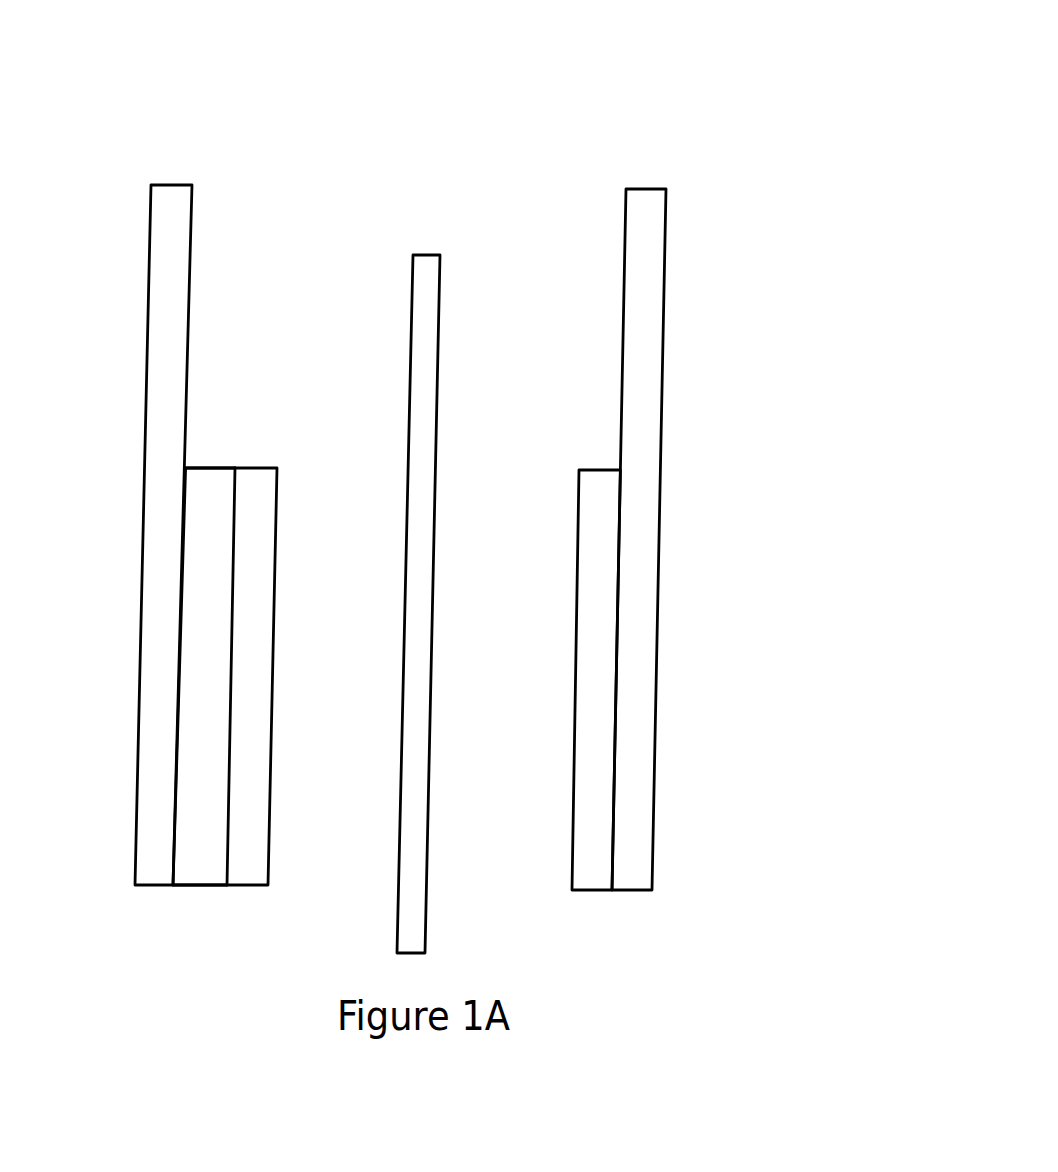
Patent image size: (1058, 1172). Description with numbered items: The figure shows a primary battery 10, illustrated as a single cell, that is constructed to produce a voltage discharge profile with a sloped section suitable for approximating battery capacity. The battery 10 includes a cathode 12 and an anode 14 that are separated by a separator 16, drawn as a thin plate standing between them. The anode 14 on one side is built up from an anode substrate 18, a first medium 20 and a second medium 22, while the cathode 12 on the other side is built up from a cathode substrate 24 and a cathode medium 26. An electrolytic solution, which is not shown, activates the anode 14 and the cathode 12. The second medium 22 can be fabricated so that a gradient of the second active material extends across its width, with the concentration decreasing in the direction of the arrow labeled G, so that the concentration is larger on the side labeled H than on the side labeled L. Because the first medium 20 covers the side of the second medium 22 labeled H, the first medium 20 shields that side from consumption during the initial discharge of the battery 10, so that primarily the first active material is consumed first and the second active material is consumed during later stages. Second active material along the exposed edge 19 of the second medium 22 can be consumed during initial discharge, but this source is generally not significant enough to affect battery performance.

The primary battery 10 is at (658, 158).
The cathode 12 is at (573, 200).
The anode 14 is at (282, 345).
The separator 16 is at (433, 540).
The anode substrate 18 is at (135, 843).
The exposed edge 19 is at (207, 885).
The first medium 20 is at (268, 848).
The second medium 22 is at (213, 495).
The cathode substrate 24 is at (645, 763).
The cathode medium 26 is at (582, 822).